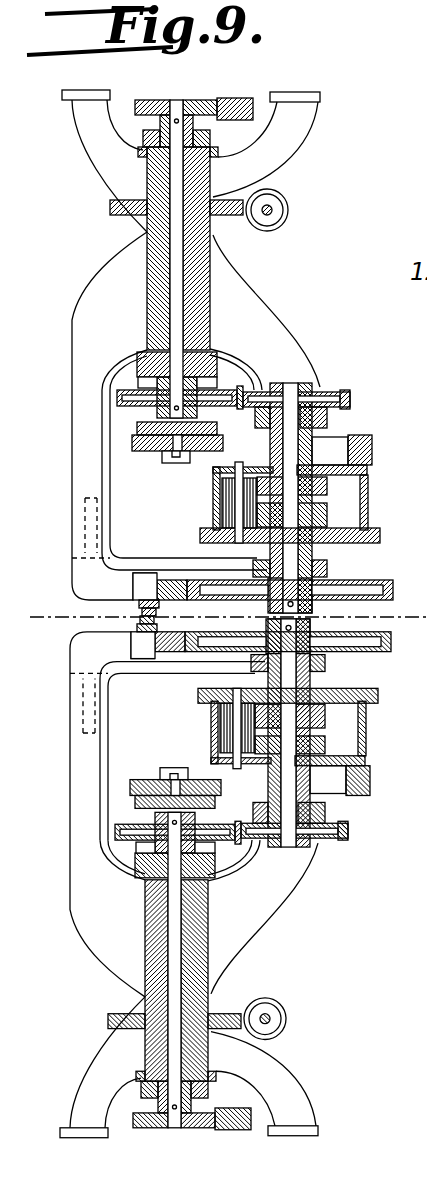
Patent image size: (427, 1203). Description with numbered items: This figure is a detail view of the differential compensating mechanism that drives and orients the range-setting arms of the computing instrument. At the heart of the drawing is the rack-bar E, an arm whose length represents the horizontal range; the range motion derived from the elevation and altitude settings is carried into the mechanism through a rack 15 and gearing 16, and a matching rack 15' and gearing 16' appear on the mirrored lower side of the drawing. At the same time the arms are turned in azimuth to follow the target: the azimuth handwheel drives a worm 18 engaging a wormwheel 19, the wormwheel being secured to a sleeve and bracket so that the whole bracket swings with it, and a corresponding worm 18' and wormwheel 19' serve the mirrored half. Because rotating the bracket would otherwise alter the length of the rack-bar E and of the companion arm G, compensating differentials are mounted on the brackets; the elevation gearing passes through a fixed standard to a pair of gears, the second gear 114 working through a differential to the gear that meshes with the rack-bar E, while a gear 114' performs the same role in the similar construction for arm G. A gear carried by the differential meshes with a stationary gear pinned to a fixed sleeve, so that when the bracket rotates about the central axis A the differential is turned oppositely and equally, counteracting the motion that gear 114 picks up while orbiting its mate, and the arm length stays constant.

The rack 15 is at (242, 95).
The locking bolt 15' is at (233, 1136).
The gearing 16 is at (169, 92).
The flange collar 16' is at (168, 1139).
The worm 18 is at (290, 204).
The roller 18' is at (293, 1018).
The wormwheel 19 is at (156, 223).
The flange 19' is at (149, 1021).
The gear 114 is at (317, 485).
The shaft flange 114' is at (329, 737).
The arm E is at (160, 583).
The arm G is at (157, 655).
The axis A is at (36, 648).